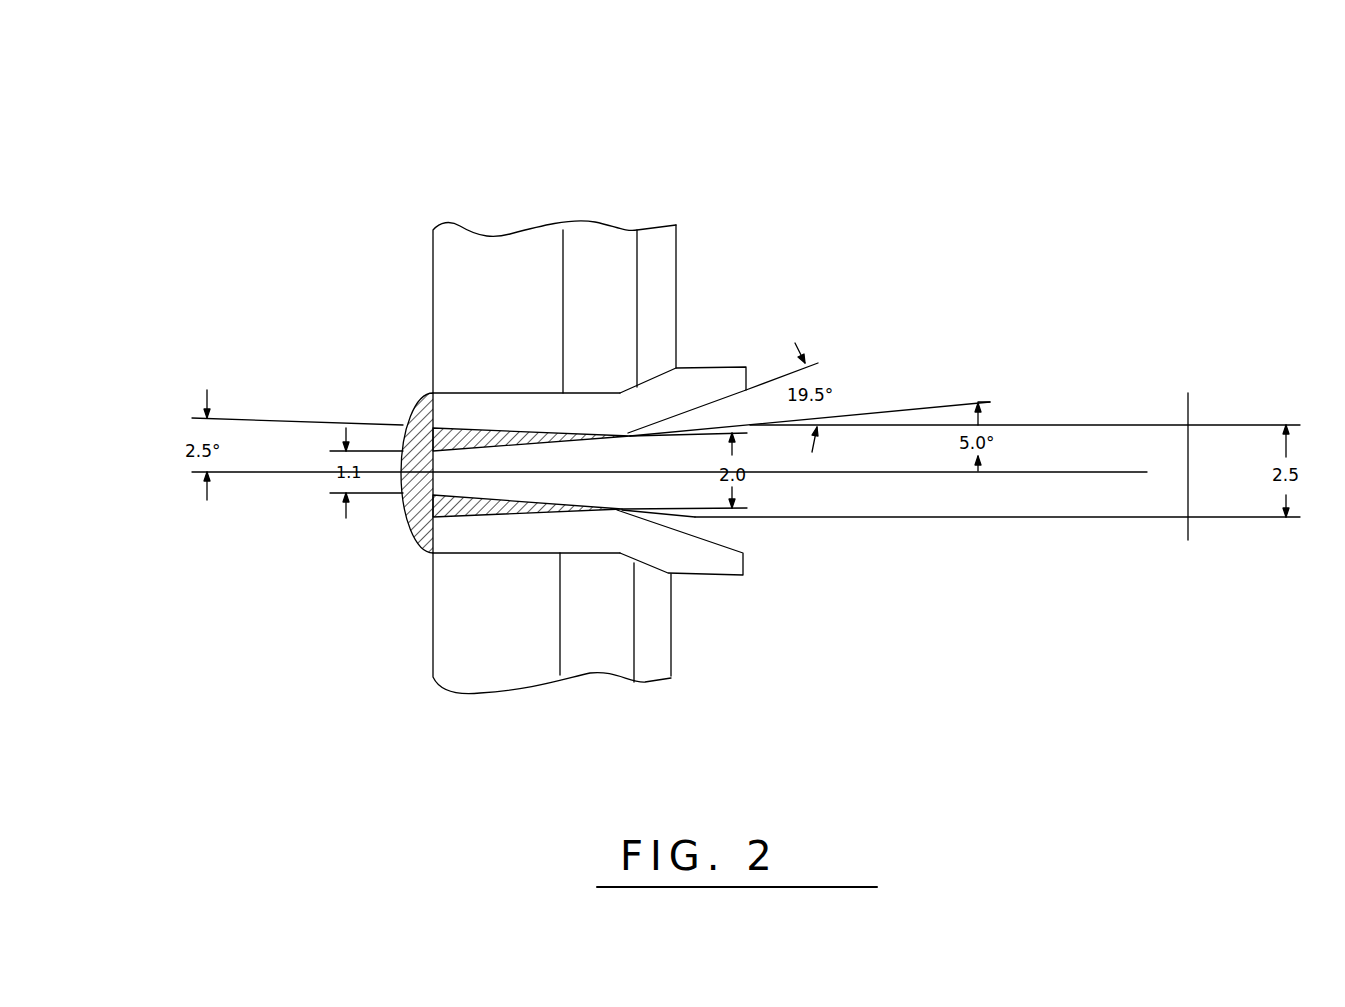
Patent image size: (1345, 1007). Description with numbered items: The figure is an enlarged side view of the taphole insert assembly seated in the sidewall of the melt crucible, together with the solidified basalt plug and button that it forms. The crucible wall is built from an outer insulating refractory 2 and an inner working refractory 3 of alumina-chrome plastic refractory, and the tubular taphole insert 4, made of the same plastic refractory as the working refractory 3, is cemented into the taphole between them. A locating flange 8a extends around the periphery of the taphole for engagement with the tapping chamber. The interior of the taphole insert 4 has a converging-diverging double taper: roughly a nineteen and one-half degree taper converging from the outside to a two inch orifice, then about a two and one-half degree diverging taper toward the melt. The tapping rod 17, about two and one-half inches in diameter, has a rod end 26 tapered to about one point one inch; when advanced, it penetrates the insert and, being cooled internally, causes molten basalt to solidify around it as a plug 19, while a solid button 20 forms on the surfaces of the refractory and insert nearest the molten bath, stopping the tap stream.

The insulating refractory 2 is at (597, 273).
The working refractory 3 is at (488, 240).
The taphole insert 4 is at (520, 538).
The locating flange 8a is at (675, 265).
The tapping rod 17 is at (942, 507).
The plug 19 is at (463, 430).
The button 20 is at (403, 523).
The tapping rod end 26 is at (400, 497).